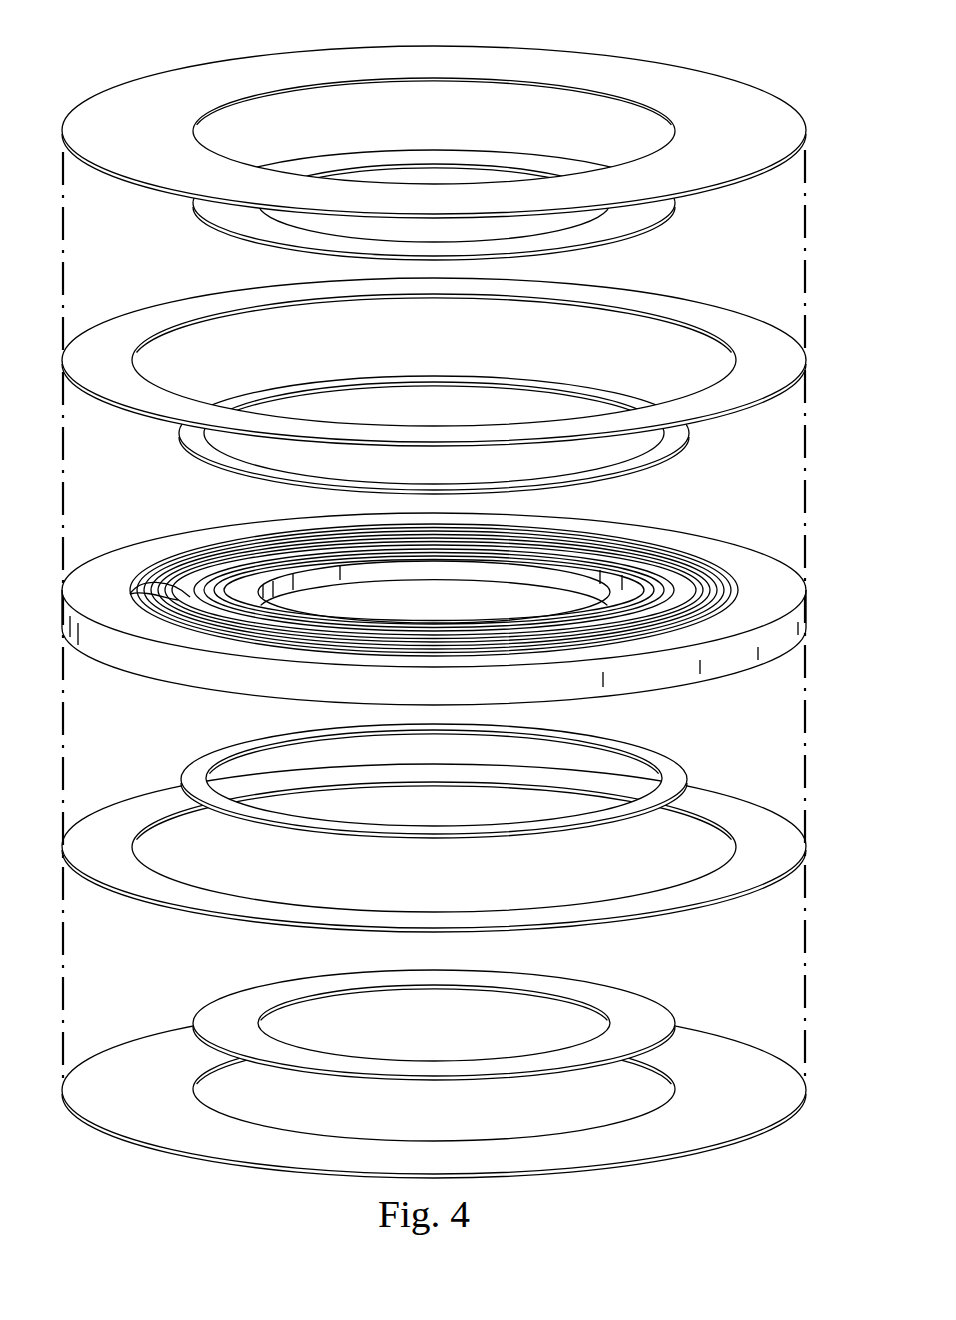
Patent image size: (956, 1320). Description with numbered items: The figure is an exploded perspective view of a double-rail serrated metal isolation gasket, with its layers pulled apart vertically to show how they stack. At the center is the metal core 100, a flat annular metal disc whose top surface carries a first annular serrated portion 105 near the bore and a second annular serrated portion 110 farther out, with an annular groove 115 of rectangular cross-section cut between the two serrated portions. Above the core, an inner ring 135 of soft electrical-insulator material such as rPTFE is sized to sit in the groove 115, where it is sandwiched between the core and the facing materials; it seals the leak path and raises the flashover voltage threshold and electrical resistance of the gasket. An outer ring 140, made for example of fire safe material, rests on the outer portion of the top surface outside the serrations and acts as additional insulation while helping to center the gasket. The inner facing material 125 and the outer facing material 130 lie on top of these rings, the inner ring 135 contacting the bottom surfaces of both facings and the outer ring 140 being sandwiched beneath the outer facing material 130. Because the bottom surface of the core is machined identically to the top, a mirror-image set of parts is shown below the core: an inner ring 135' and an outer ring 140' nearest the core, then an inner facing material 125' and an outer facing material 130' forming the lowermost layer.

The metal core 100 is at (730, 555).
The first annular serrated portion 105 is at (246, 552).
The second annular serrated portion 110 is at (157, 552).
The annular groove 115 is at (130, 594).
The inner facing material 125 is at (434, 181).
The outer facing material 130 is at (434, 114).
The inner ring 135 is at (438, 445).
The outer ring 140 is at (434, 350).
The inner ring 135' is at (448, 777).
The outer ring 140' is at (434, 841).
The inner facing material 125' is at (434, 1012).
The outer facing material 130' is at (434, 1083).